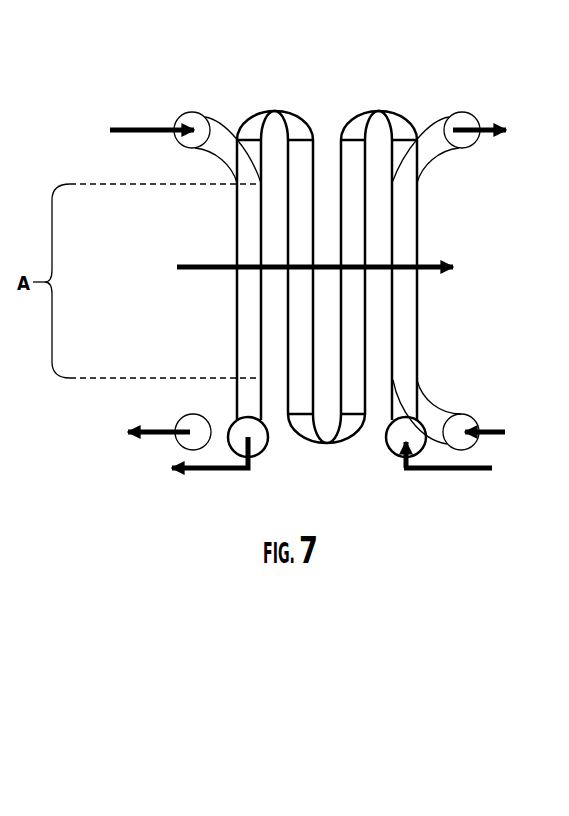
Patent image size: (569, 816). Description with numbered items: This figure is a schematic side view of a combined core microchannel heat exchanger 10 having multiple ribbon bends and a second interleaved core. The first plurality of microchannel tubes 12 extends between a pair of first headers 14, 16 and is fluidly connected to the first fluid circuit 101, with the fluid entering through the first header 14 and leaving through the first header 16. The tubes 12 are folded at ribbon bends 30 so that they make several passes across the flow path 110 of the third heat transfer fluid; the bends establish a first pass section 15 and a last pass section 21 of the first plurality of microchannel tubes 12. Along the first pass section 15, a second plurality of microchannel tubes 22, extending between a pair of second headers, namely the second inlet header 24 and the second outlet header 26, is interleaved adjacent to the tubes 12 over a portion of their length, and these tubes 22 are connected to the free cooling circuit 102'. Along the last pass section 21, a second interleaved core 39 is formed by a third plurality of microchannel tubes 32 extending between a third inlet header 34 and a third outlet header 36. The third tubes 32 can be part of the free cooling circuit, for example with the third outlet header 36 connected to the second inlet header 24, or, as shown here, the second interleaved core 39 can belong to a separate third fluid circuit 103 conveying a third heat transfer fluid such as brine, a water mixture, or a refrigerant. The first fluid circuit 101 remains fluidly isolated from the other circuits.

The combined core microchannel heat exchanger 10 is at (434, 60).
The first plurality of microchannel tubes 12 is at (237, 130).
The first header 14 is at (396, 452).
The first pass section 15 is at (252, 106).
The first header 16 is at (268, 450).
The last pass section 21 is at (413, 110).
The second plurality of microchannel tubes 22 is at (208, 162).
The second inlet header 24 is at (180, 141).
The second outlet header 26 is at (185, 414).
The ribbon bend 30 is at (273, 108).
The third plurality of microchannel tubes 32 is at (433, 158).
The third inlet header 34 is at (475, 143).
The third outlet header 36 is at (477, 414).
The second interleaved core 39 is at (430, 398).
The first fluid circuit 101 is at (445, 472).
The free cooling circuit 102' is at (133, 109).
The third fluid circuit 103 is at (495, 438).
The flow path of the third heat transfer fluid 110 is at (188, 264).